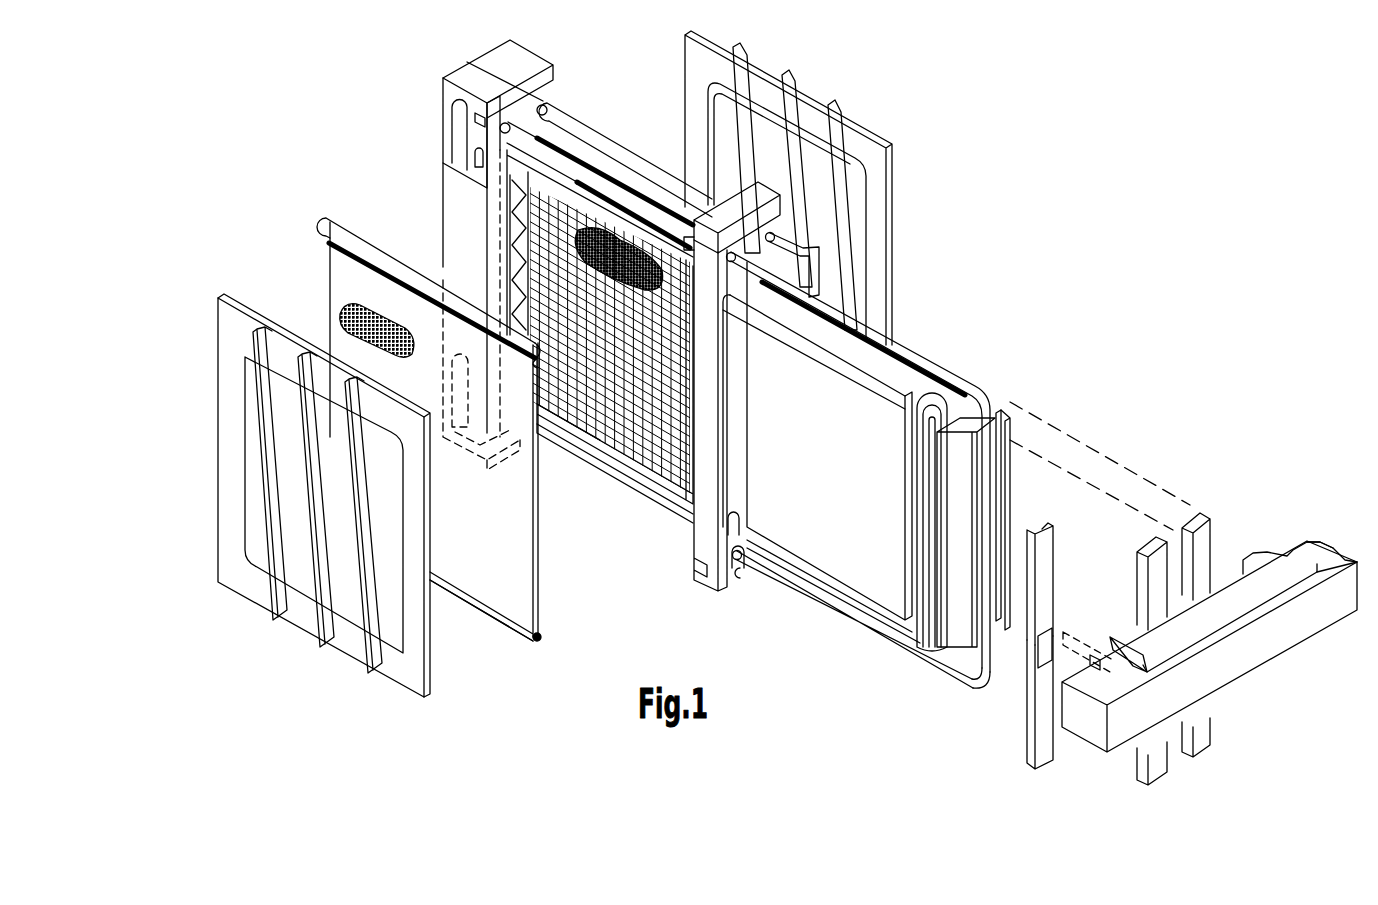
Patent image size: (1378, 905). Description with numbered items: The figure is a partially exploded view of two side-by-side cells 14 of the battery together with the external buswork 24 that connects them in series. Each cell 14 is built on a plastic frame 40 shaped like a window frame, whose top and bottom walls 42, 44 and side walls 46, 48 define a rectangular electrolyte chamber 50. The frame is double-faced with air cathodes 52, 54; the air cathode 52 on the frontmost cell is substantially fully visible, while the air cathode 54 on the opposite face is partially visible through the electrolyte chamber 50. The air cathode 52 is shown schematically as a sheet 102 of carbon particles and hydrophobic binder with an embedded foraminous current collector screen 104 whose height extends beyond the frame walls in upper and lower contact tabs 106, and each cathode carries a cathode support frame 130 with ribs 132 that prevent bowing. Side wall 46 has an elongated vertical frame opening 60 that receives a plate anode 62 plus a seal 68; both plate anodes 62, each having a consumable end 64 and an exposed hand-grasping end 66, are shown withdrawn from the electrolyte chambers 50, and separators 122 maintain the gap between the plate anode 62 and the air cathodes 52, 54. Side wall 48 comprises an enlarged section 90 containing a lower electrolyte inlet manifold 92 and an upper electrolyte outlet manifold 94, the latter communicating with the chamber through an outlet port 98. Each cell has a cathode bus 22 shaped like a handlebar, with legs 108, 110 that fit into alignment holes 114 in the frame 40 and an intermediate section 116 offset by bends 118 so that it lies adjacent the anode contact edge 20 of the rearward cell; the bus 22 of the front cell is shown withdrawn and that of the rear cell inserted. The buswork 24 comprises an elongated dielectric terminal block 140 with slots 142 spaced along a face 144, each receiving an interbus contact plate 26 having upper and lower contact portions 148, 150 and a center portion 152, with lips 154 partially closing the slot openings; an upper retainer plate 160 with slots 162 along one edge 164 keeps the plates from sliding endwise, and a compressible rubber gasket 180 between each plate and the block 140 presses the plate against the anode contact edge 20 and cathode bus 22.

The cell 14 is at (575, 130).
The anode contact edge 20 is at (967, 458).
The cathode bus 22 is at (815, 288).
The external buswork 24 is at (1142, 602).
The interbus contact plate 26 is at (1008, 747).
The frame 40 is at (738, 562).
The top wall 42 is at (570, 200).
The bottom wall 44 is at (628, 487).
The side wall 46 is at (718, 408).
The side wall 48 is at (505, 236).
The electrolyte chamber 50 is at (670, 470).
The air cathode 52 is at (510, 557).
The air cathode 54 is at (631, 230).
The frame opening 60 is at (737, 524).
The plate anode 62 is at (885, 375).
The consumable end 64 is at (810, 467).
The hand-grasping end 66 is at (955, 546).
The seal 68 is at (930, 575).
The enlarged section 90 is at (452, 262).
The electrolyte inlet manifold 92 is at (462, 432).
The electrolyte outlet manifold 94 is at (460, 128).
The outlet port 98 is at (479, 170).
The sheet 102 is at (330, 258).
The current collector screen 104 is at (336, 316).
The contact tab 106 is at (332, 216).
The leg 108 is at (885, 320).
The leg 110 is at (808, 590).
The alignment hole 114 is at (550, 103).
The intermediate section 116 is at (988, 523).
The bend 118 is at (968, 685).
The separator 122 is at (568, 412).
The cathode support frame 130 is at (886, 172).
The rib 132 is at (838, 102).
The terminal block 140 is at (1327, 613).
The slot 142 is at (1112, 660).
The face 144 is at (1300, 540).
The upper contact portion 148 is at (1045, 735).
The lower contact portion 150 is at (1048, 558).
The center portion 152 is at (1050, 620).
The lip 154 is at (1095, 665).
The retainer plate 160 is at (1220, 610).
The slot 162 is at (1270, 585).
The edge 164 is at (1247, 553).
The rubber gasket 180 is at (1068, 628).